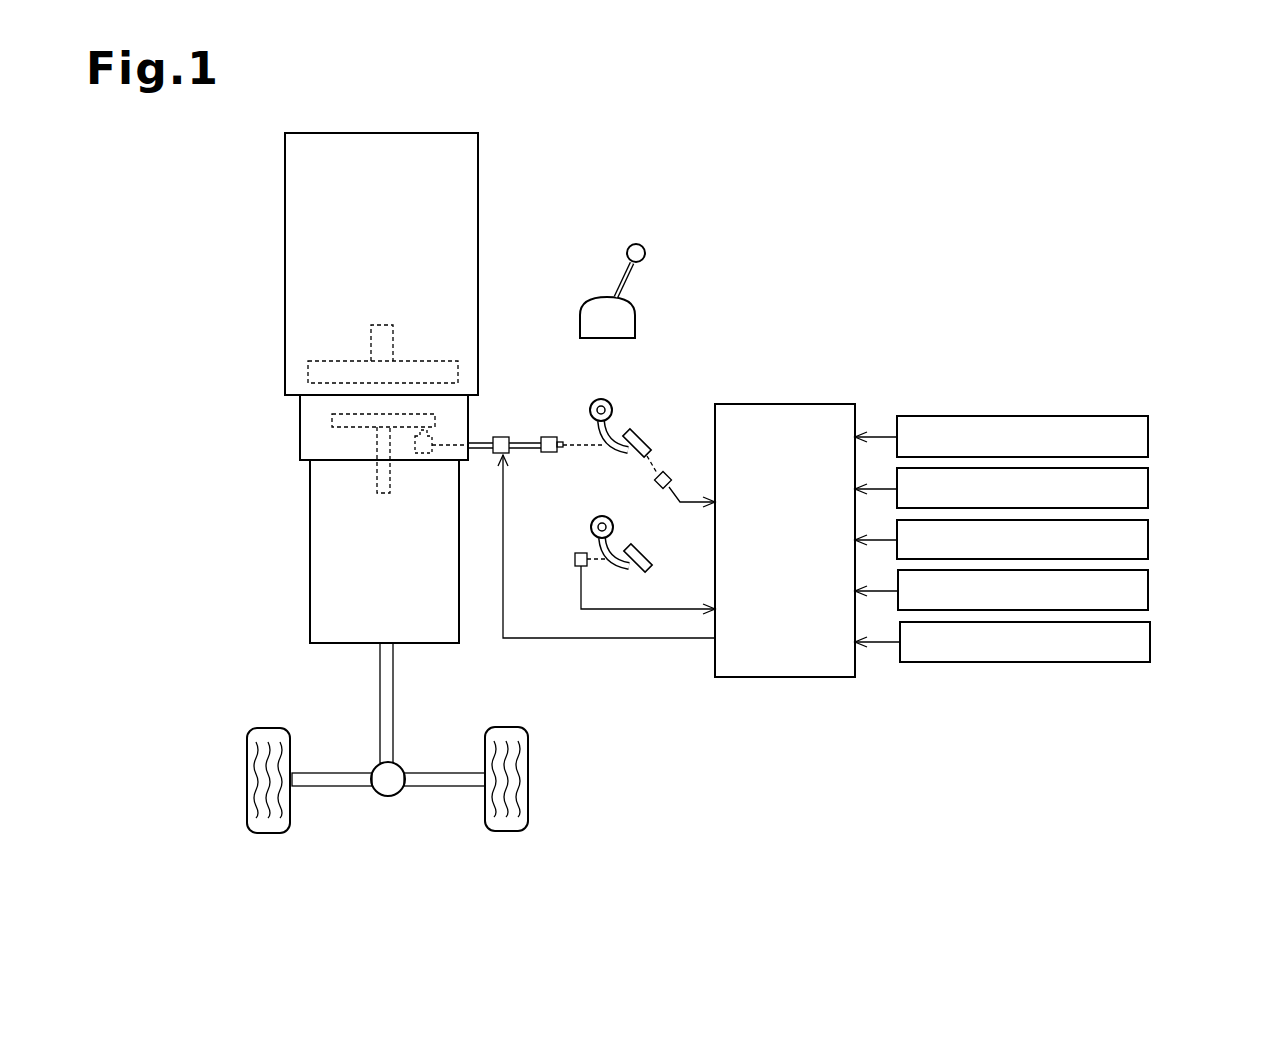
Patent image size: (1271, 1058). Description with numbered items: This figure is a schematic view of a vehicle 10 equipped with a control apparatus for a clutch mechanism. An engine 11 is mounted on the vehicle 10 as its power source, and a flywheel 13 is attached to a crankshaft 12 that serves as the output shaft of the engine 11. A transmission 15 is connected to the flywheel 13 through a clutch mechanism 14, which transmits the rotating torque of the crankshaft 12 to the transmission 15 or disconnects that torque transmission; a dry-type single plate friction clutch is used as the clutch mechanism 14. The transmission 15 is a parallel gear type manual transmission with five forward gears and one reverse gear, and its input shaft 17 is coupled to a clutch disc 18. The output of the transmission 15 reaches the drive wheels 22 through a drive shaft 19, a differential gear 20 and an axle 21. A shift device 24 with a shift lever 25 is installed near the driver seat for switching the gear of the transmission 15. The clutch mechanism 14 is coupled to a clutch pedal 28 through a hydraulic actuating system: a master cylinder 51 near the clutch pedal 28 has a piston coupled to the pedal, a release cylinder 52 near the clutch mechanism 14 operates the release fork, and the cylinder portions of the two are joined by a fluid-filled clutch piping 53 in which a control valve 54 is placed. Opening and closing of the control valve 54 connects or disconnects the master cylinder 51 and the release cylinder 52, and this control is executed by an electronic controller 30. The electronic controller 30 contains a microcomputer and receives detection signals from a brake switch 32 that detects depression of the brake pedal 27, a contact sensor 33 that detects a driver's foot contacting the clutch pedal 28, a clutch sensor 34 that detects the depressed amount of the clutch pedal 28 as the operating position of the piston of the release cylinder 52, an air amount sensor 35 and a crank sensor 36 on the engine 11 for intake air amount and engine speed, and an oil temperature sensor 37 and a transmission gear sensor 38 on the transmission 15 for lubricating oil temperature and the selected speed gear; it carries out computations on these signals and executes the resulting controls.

The vehicle 10 is at (182, 152).
The engine 11 is at (285, 172).
The crankshaft 12 is at (371, 345).
The flywheel 13 is at (458, 372).
The clutch mechanism 14 is at (300, 447).
The transmission 15 is at (310, 550).
The input shaft 17 is at (377, 482).
The clutch disc 18 is at (332, 420).
The drive shaft 19 is at (380, 696).
The differential gear 20 is at (387, 798).
The axle 21 is at (449, 789).
The drive wheels 22 is at (532, 776).
The shift device 24 is at (637, 325).
The shift lever 25 is at (629, 281).
The brake pedal 27 is at (590, 526).
The clutch pedal 28 is at (590, 410).
The electronic controller 30 is at (829, 403).
The brake switch 32 is at (575, 559).
The contact sensor 33 is at (665, 471).
The clutch sensor 34 is at (1150, 436).
The air amount sensor 35 is at (1150, 487).
The crank sensor 36 is at (1150, 538).
The oil temperature sensor 37 is at (1150, 590).
The transmission gear sensor 38 is at (1152, 640).
The master cylinder 51 is at (550, 453).
The release cylinder 52 is at (425, 455).
The clutch piping 53 is at (484, 437).
The control valve 54 is at (495, 457).